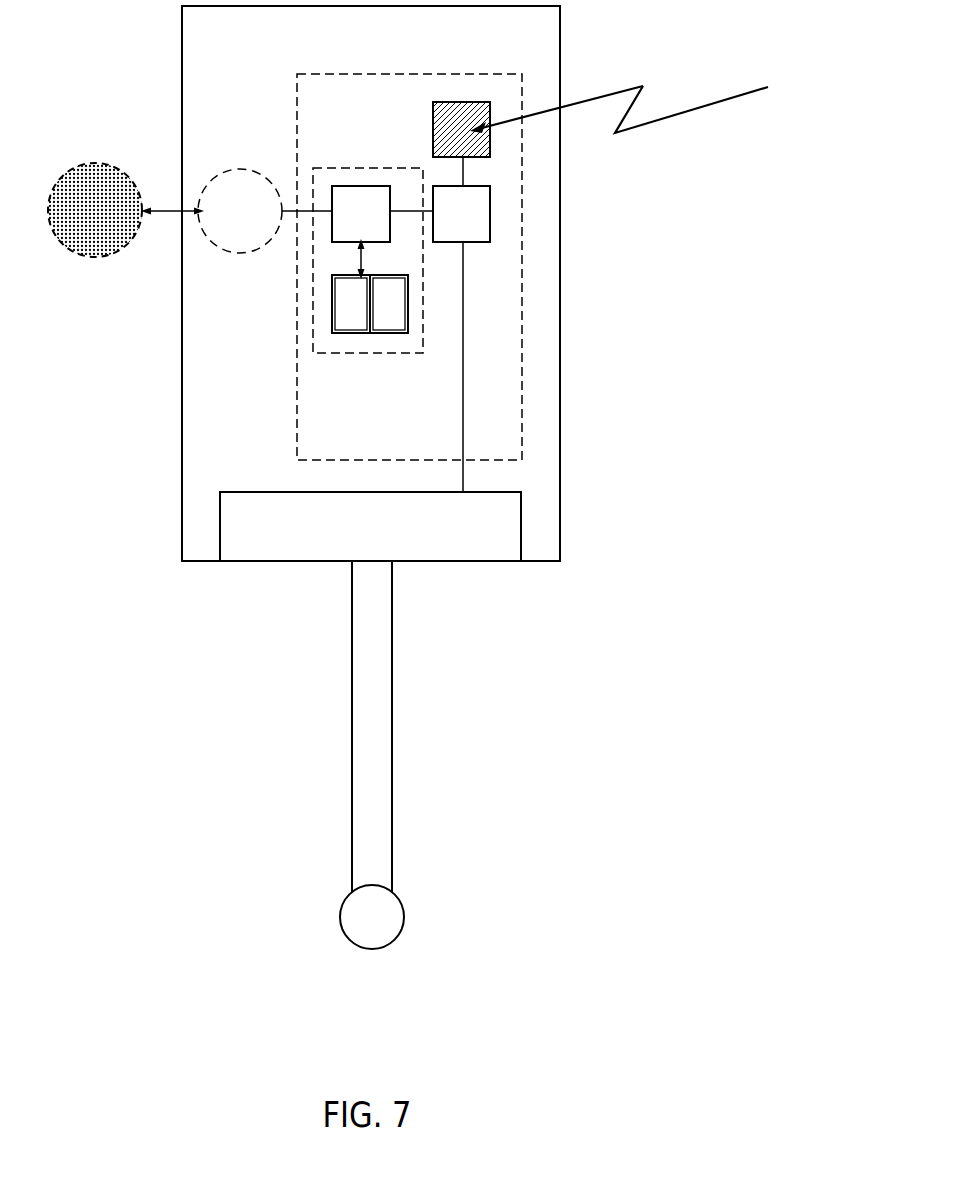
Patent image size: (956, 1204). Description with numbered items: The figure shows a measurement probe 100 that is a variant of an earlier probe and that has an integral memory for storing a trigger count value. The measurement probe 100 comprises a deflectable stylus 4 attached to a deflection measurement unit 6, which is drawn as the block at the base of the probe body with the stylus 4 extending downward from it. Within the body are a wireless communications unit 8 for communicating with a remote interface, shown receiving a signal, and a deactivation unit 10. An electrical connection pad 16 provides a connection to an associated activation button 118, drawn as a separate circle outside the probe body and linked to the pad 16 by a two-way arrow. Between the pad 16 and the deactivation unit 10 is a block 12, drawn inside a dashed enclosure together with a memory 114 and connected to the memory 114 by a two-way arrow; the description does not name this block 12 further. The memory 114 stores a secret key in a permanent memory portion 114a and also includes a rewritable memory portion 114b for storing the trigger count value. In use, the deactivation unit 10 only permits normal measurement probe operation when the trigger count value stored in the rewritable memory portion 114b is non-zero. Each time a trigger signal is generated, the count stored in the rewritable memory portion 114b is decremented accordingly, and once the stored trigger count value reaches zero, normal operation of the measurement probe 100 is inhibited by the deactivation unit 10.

The measurement probe 100 is at (548, 584).
The deflectable stylus 4 is at (392, 738).
The deflection measurement unit 6 is at (365, 539).
The wireless communications unit 8 is at (433, 128).
The deactivation unit 10 is at (448, 226).
The controller 12 is at (347, 226).
The electrical connection pad 16 is at (254, 226).
The memory 114 is at (379, 337).
The permanent memory portion 114a is at (354, 282).
The rewritable memory portion 114b is at (392, 282).
The activation button 118 is at (95, 258).